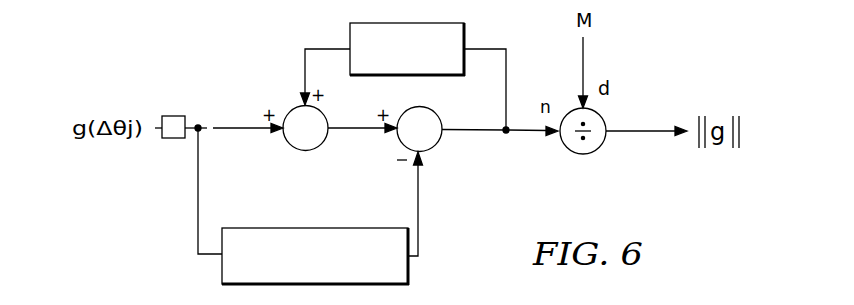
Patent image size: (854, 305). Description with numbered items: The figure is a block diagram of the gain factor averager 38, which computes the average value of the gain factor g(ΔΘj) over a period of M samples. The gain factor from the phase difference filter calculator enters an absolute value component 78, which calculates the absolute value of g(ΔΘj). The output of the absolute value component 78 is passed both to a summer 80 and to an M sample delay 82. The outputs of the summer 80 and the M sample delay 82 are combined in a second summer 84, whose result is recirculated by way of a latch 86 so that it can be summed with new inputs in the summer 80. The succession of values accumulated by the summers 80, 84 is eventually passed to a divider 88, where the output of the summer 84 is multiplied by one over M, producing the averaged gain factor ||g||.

The gain factor averager 38 is at (230, 73).
The absolute value component 78 is at (173, 114).
The summer 80 is at (327, 143).
The M sample delay 82 is at (408, 263).
The summer 84 is at (441, 144).
The latch 86 is at (464, 42).
The divider 88 is at (600, 146).